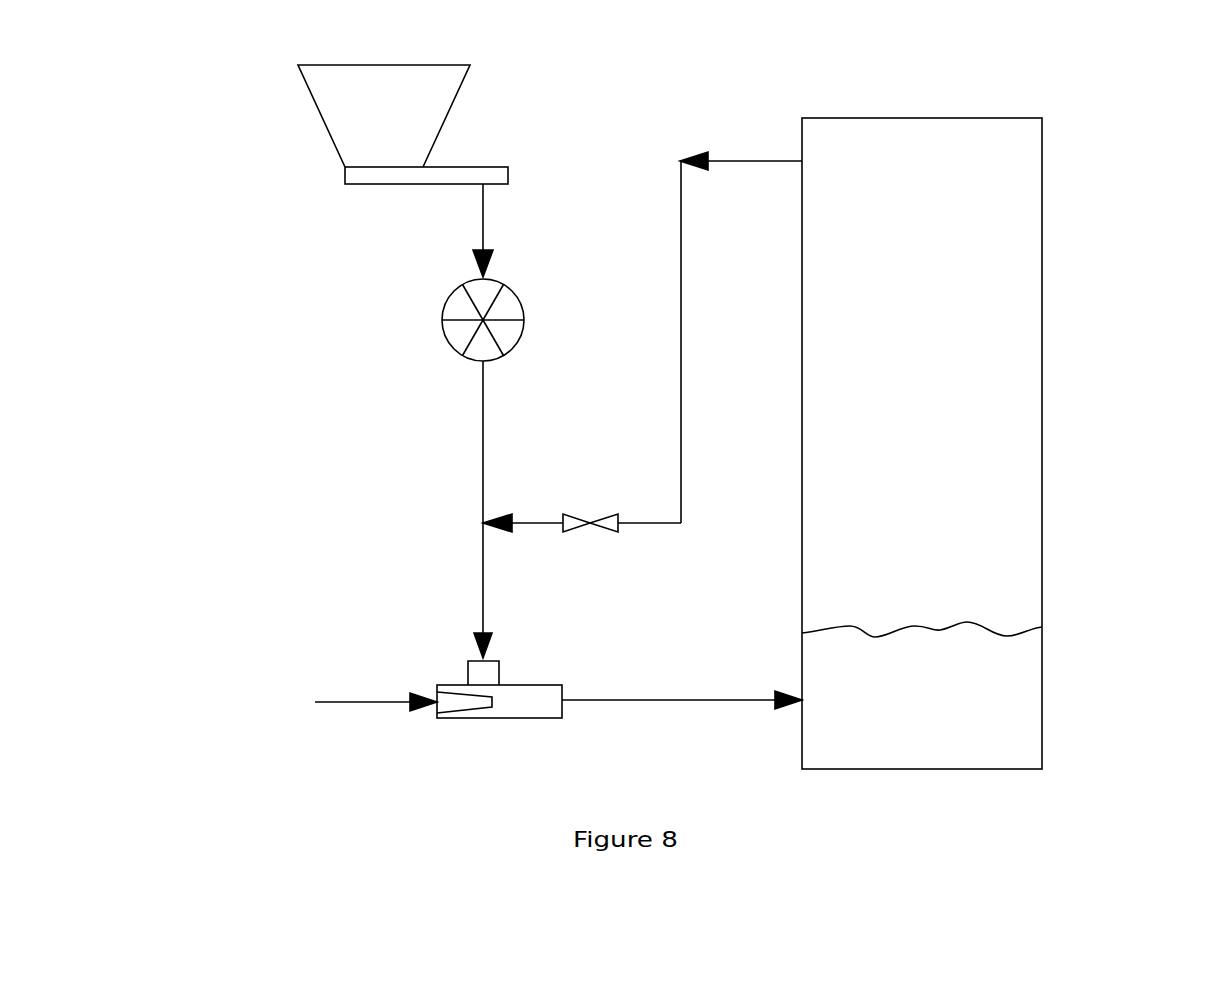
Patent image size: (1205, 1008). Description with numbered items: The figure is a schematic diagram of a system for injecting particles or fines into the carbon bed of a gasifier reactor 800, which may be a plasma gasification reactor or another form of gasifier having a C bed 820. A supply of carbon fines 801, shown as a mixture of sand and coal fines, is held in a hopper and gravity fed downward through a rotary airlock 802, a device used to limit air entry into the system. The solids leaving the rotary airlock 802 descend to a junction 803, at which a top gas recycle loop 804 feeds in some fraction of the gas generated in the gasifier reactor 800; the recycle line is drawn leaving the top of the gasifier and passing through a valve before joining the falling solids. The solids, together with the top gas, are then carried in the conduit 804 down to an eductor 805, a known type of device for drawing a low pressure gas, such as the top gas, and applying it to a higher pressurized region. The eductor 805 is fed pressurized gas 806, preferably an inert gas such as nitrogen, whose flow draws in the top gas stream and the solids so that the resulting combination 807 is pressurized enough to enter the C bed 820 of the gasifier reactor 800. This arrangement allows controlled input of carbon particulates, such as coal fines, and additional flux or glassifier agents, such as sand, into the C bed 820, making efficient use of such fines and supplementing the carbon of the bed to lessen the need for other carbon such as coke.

The gasifier reactor 800 is at (982, 443).
The supply of carbon fines 801 is at (347, 111).
The rotary airlock 802 is at (379, 344).
The junction 803 is at (483, 523).
The top gas recycle loop 804 is at (382, 588).
The eductor 805 is at (547, 682).
The pressurized gas 806 is at (315, 739).
The combination 807 is at (682, 737).
The C bed 820 is at (973, 661).